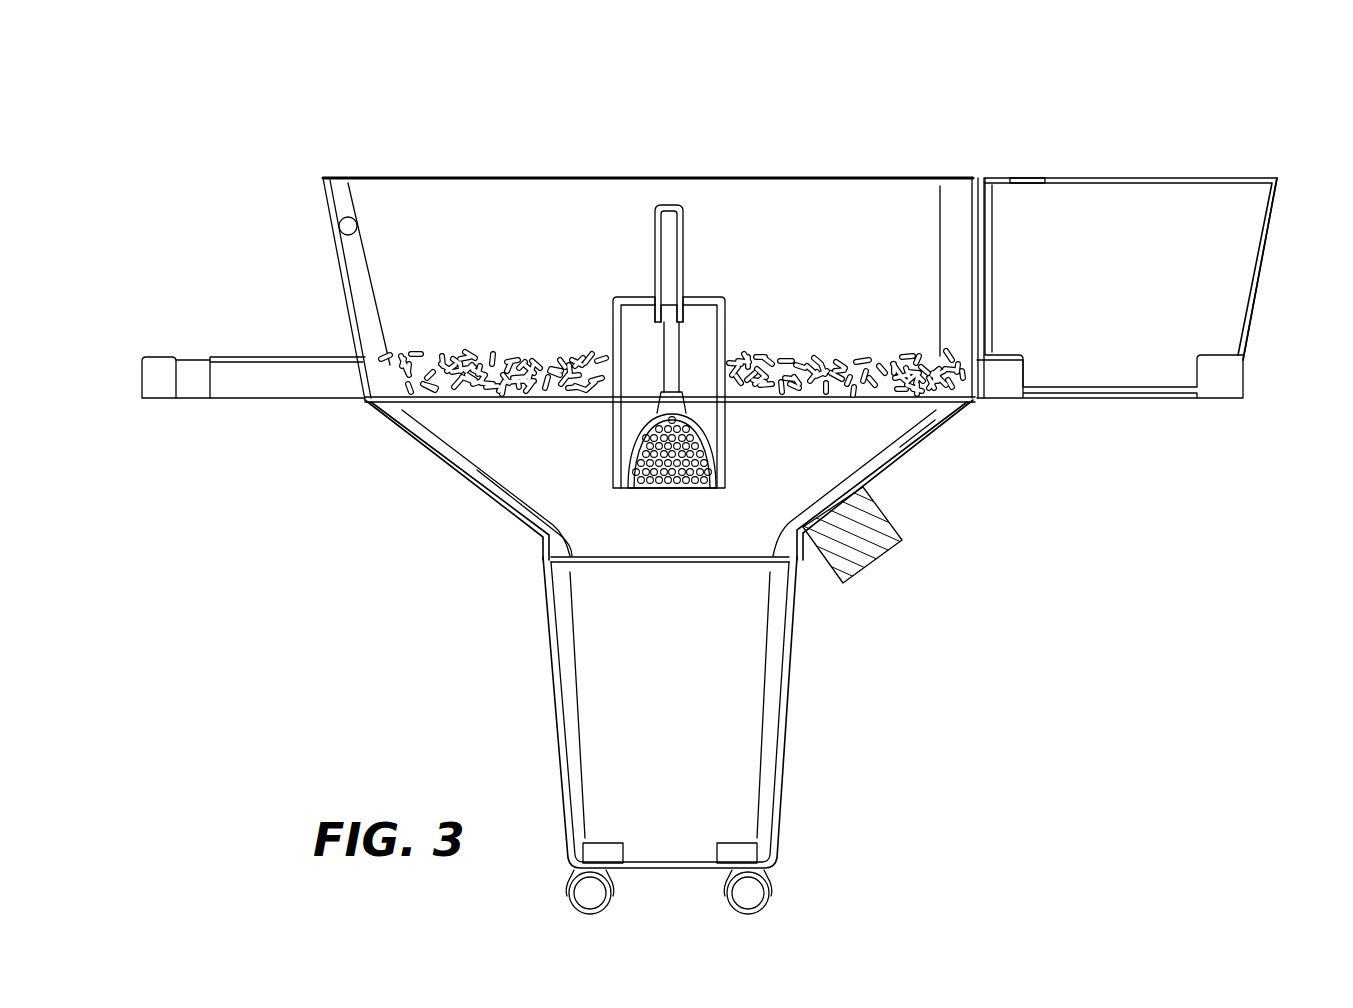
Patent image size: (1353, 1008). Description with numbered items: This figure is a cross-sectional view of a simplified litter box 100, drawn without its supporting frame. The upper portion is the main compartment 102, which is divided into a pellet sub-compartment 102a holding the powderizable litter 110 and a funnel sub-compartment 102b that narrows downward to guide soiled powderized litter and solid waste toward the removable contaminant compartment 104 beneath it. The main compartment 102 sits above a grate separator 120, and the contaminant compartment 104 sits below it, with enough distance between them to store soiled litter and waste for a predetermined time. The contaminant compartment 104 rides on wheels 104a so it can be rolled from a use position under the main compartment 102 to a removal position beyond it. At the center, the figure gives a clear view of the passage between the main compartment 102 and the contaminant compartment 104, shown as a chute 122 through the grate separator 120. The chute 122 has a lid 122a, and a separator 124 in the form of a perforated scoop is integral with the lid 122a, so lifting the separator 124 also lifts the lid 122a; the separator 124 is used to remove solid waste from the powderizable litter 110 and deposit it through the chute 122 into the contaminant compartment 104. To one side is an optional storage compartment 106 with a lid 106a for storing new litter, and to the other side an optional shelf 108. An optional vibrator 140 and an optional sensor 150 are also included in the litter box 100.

The litter box 100 is at (950, 40).
The main compartment 102 is at (387, 178).
The pellet sub-compartment 102a is at (342, 270).
The funnel sub-compartment 102b is at (434, 456).
The removable contaminant compartment 104 is at (787, 745).
The wheels 104a is at (757, 917).
The storage compartment 106 is at (1262, 280).
The lid 106a is at (1148, 178).
The shelf 108 is at (142, 356).
The powderizable litter 110 is at (780, 350).
The grate separator 120 is at (907, 406).
The chute 122 is at (727, 440).
The lid 122a is at (700, 297).
The separator 124 is at (653, 450).
The vibrator 140 is at (893, 548).
The sensor 150 is at (350, 222).